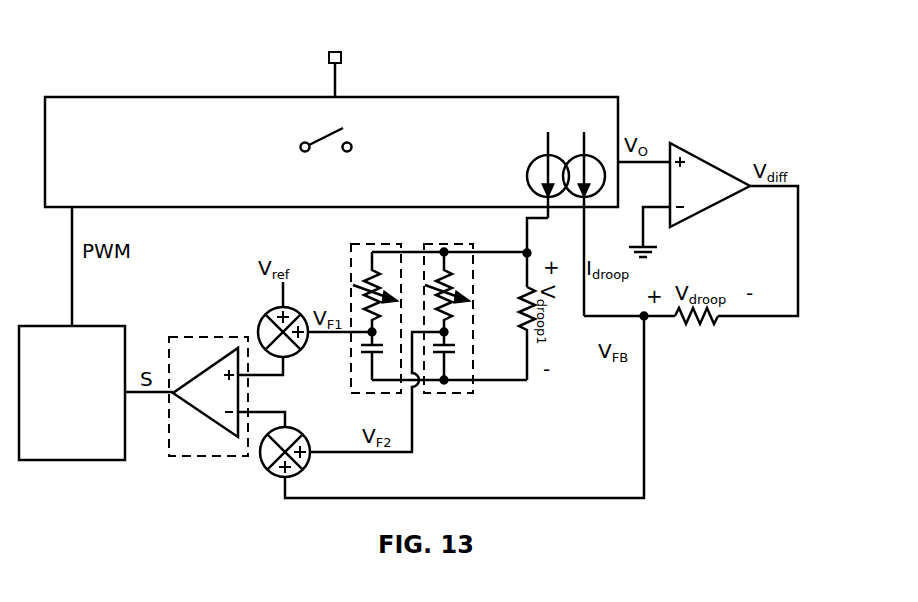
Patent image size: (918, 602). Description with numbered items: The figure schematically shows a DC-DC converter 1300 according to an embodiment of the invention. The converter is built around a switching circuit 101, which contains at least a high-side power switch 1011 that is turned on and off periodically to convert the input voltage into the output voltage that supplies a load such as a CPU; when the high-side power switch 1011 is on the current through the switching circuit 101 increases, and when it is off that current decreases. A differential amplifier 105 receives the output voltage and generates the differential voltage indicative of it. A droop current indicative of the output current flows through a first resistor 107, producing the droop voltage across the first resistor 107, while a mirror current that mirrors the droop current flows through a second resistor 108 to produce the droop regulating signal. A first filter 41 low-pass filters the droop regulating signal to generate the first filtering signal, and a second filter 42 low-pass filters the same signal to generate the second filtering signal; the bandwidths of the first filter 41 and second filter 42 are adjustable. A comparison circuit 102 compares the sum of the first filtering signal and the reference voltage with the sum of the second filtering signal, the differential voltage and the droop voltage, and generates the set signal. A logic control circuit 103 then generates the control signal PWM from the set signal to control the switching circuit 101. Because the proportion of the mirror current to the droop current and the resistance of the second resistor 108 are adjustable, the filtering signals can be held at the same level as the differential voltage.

The DC-DC converter 1300 is at (740, 72).
The switching circuit 101 is at (331, 172).
The high-side power switch 1011 is at (330, 153).
The logic control circuit 103 is at (72, 393).
The comparison circuit 102 is at (208, 396).
The first filter 41 is at (361, 318).
The second filter 42 is at (452, 332).
The second resistor 108 is at (508, 333).
The differential amplifier 105 is at (710, 185).
The first resistor 107 is at (696, 332).